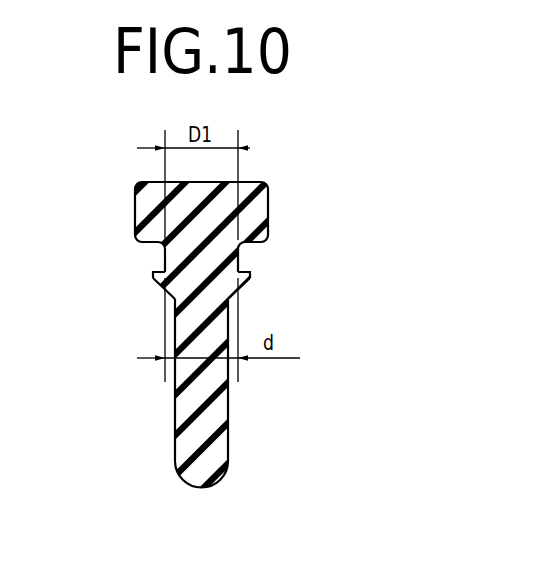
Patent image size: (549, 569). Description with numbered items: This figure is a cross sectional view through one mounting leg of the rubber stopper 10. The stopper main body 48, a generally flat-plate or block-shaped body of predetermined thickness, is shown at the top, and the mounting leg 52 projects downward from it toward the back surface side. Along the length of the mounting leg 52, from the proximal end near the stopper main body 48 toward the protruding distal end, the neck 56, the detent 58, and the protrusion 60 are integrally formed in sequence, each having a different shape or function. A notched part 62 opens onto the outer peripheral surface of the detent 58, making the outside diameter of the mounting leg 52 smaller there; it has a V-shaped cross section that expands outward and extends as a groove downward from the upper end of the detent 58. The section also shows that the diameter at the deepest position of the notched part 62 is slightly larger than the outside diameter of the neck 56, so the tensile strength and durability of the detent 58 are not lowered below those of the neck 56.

The rubber stopper 10 is at (185, 298).
The stopper main body 48 is at (256, 213).
The mounting leg 52 is at (234, 393).
The neck 56 is at (177, 260).
The detent 58 is at (173, 304).
The protrusion 60 is at (183, 407).
The notched part 62 is at (154, 277).